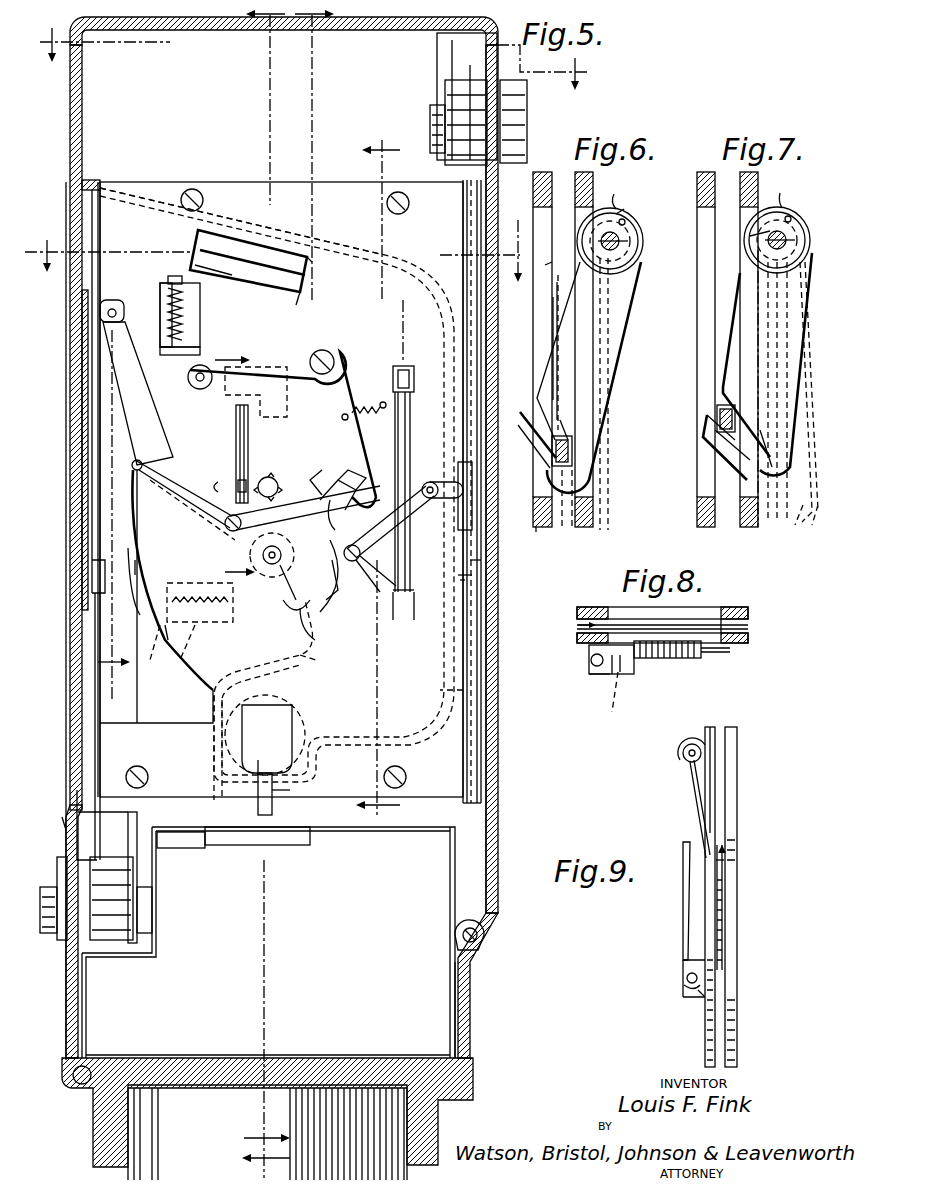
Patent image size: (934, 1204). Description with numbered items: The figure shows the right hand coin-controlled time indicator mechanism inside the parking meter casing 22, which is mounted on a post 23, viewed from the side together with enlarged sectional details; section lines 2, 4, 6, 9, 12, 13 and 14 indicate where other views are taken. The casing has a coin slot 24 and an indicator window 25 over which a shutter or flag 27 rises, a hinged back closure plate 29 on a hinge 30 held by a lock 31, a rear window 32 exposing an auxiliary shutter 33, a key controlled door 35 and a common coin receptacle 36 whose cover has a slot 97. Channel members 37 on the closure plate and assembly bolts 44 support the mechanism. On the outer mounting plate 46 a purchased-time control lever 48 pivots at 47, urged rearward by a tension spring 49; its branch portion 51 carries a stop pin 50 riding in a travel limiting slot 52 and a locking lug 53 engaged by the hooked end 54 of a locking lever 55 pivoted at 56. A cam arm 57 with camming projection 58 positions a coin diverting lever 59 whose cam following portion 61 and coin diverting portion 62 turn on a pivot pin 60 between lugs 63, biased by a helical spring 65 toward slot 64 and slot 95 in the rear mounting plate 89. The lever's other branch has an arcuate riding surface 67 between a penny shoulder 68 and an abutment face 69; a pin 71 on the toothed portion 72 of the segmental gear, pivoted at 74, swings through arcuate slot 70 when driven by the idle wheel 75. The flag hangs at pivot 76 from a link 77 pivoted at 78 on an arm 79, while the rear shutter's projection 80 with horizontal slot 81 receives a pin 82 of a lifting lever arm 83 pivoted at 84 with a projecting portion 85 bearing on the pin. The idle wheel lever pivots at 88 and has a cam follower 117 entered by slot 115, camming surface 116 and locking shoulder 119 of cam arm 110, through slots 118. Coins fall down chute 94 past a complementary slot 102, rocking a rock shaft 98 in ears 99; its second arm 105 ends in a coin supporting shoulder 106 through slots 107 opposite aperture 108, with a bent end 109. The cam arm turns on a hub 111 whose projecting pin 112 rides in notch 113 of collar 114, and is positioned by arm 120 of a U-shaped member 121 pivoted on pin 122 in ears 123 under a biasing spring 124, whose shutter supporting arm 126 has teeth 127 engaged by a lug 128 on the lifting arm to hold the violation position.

In FIG. 5, the section line 2- 2 is at (289, 589).
In FIG. 5, the section line 4- 4 is at (266, 590).
In FIG. 5, the section line 6- 6 is at (235, 469).
In FIG. 5, the section line 9- 9 is at (114, 515).
In FIG. 5, the section line 12- 12 is at (317, 53).
In FIG. 5, the section line 13- 13 is at (276, 251).
In FIG. 5, the section line 14- 14 is at (379, 475).
In FIG. 5, the parking meter casing 22 is at (478, 30).
In FIG. 5, the standard or post 23 is at (267, 1132).
In FIG. 5, the coin slot 24 is at (80, 192).
In FIG. 5, the indicator window 25 is at (90, 540).
In FIG. 5, the shutter or signal flag 27 is at (84, 494).
In FIG. 5, the back closure plate 29 is at (500, 750).
In FIG. 5, the hinge 30 is at (462, 935).
In FIG. 5, the latch or lock 31 is at (520, 104).
In FIG. 5, the window 32 is at (466, 585).
In FIG. 5, the auxiliary time interval scale or shutter 33 is at (484, 560).
In FIG. 6, the auxiliary time interval scale or shutter 33 is at (536, 530).
In FIG. 5, the key controlled hinged door 35 is at (70, 972).
In FIG. 5, the common receptacle 36 is at (452, 982).
In FIG. 5, the fixed channel member 37 is at (470, 724).
In FIG. 5, the assembly bolt 44 is at (418, 765).
In FIG. 5, the outer mounting plate 46 is at (236, 185).
In FIG. 6, the outer mounting plate 46 is at (548, 527).
In FIG. 7, the outer mounting plate 46 is at (699, 512).
In FIG. 8, the outer mounting plate 46 is at (748, 638).
In FIG. 9, the outer mounting plate 46 is at (737, 755).
In FIG. 5, the pivot 47 is at (328, 348).
In FIG. 5, the purchased-time control lever 48 is at (250, 436).
In FIG. 5, the tension spring 49 is at (392, 372).
In FIG. 5, the stop pin 50 is at (412, 470).
In FIG. 5, the right hand branch portion 51 is at (364, 418).
In FIG. 5, the travel limiting slot 52 is at (356, 500).
In FIG. 5, the locking lug 53 is at (362, 474).
In FIG. 5, the hooked end 54 is at (364, 429).
In FIG. 5, the locking lever 55 is at (250, 516).
In FIG. 5, the pivot 56 is at (203, 481).
In FIG. 5, the cam arm 57 is at (312, 304).
In FIG. 8, the cam arm 57 is at (730, 652).
In FIG. 5, the camming projection 58 is at (186, 318).
In FIG. 8, the camming projection 58 is at (609, 702).
In FIG. 5, the coin diverting lever 59 is at (160, 283).
In FIG. 8, the coin diverting lever 59 is at (592, 676).
In FIG. 5, the vertical pivot pin 60 is at (162, 312).
In FIG. 8, the vertical pivot pin 60 is at (590, 665).
In FIG. 5, the cam following arm portion 61 is at (188, 378).
In FIG. 8, the cam following arm portion 61 is at (618, 676).
In FIG. 5, the coin diverting portion 62 is at (248, 261).
In FIG. 8, the coin diverting portion 62 is at (684, 660).
In FIG. 5, the lug 63 is at (170, 355).
In FIG. 8, the lug 63 is at (589, 652).
In FIG. 5, the slot 64 is at (312, 262).
In FIG. 8, the slot 64 is at (712, 620).
In FIG. 5, the helical spring 65 is at (220, 270).
In FIG. 5, the arcuate riding surface 67 is at (265, 555).
In FIG. 5, the penny position shoulder 68 is at (288, 615).
In FIG. 5, the abutment face 69 is at (339, 515).
In FIG. 5, the arcuate slot 70 is at (329, 590).
In FIG. 5, the pin 71 is at (299, 627).
In FIG. 5, the toothed portion 72 is at (338, 584).
In FIG. 5, the pivot 74 is at (282, 582).
In FIG. 5, the idle wheel 75 is at (268, 474).
In FIG. 5, the pivotal connection 76 is at (112, 300).
In FIG. 5, the link 77 is at (120, 410).
In FIG. 5, the pivot 78 is at (130, 462).
In FIG. 5, the arm 79 is at (187, 511).
In FIG. 5, the projection 80 is at (443, 565).
In FIG. 5, the horizontal slot 81 is at (460, 540).
In FIG. 5, the pin 82 is at (430, 500).
In FIG. 5, the lifting lever arm 83 is at (389, 529).
In FIG. 5, the pivot 84 is at (376, 586).
In FIG. 5, the projecting portion 85 is at (270, 630).
In FIG. 5, the pivot 88 is at (324, 472).
In FIG. 5, the rear mounting plate 89 is at (501, 491).
In FIG. 6, the rear mounting plate 89 is at (595, 535).
In FIG. 7, the rear mounting plate 89 is at (748, 512).
In FIG. 8, the rear mounting plate 89 is at (748, 610).
In FIG. 9, the rear mounting plate 89 is at (716, 790).
In FIG. 8, the coin chute or passage 94 is at (571, 625).
In FIG. 5, the slot 95 is at (305, 285).
In FIG. 8, the slot 95 is at (608, 608).
In FIG. 5, the slot 97 is at (245, 848).
In FIG. 6, the rock shaft 98 is at (636, 255).
In FIG. 7, the rock shaft 98 is at (796, 226).
In FIG. 9, the rock shaft 98 is at (683, 753).
In FIG. 9, the ear 99 is at (698, 745).
In FIG. 5, the complementary slot 102 is at (400, 600).
In FIG. 5, the second arm 105 is at (316, 675).
In FIG. 6, the second arm 105 is at (610, 483).
In FIG. 7, the second arm 105 is at (789, 531).
In FIG. 5, the coin supporting shoulder 106 is at (278, 756).
In FIG. 5, the slot 107 is at (258, 795).
In FIG. 5, the aperture 108 is at (290, 727).
In FIG. 5, the end of arm 109 is at (295, 804).
In FIG. 5, the cam arm 110 is at (236, 435).
In FIG. 6, the cam arm 110 is at (622, 400).
In FIG. 7, the cam arm 110 is at (732, 338).
In FIG. 9, the cam arm 110 is at (694, 796).
In FIG. 6, the hub 111 is at (622, 210).
In FIG. 7, the hub 111 is at (750, 236).
In FIG. 6, the projecting pin 112 is at (626, 219).
In FIG. 7, the projecting pin 112 is at (798, 204).
In FIG. 6, the notch 113 is at (613, 191).
In FIG. 7, the notch 113 is at (783, 187).
In FIG. 6, the collar 114 is at (630, 238).
In FIG. 7, the collar 114 is at (767, 245).
In FIG. 6, the slot 115 is at (530, 402).
In FIG. 6, the camming surface 116 is at (530, 450).
In FIG. 7, the camming surface 116 is at (712, 440).
In FIG. 5, the cam follower 117 is at (236, 480).
In FIG. 6, the cam follower 117 is at (572, 445).
In FIG. 7, the cam follower 117 is at (717, 412).
In FIG. 5, the slot 118 is at (236, 414).
In FIG. 6, the slot 118 is at (545, 268).
In FIG. 6, the locking shoulder 119 is at (570, 428).
In FIG. 7, the locking shoulder 119 is at (745, 462).
In FIG. 5, the arm 120 is at (228, 532).
In FIG. 9, the arm 120 is at (683, 892).
In FIG. 5, the U-shaped member 121 is at (155, 657).
In FIG. 9, the U-shaped member 121 is at (684, 960).
In FIG. 5, the pin 122 is at (187, 588).
In FIG. 9, the pin 122 is at (684, 988).
In FIG. 5, the ear 123 is at (166, 647).
In FIG. 9, the ear 123 is at (686, 974).
In FIG. 5, the biasing spring 124 is at (195, 590).
In FIG. 9, the biasing spring 124 is at (698, 1000).
In FIG. 5, the shutter supporting arm 126 is at (128, 568).
In FIG. 9, the shutter supporting arm 126 is at (723, 900).
In FIG. 5, the engaging teeth 127 is at (182, 505).
In FIG. 9, the engaging teeth 127 is at (726, 860).
In FIG. 9, the lug 128 is at (726, 848).